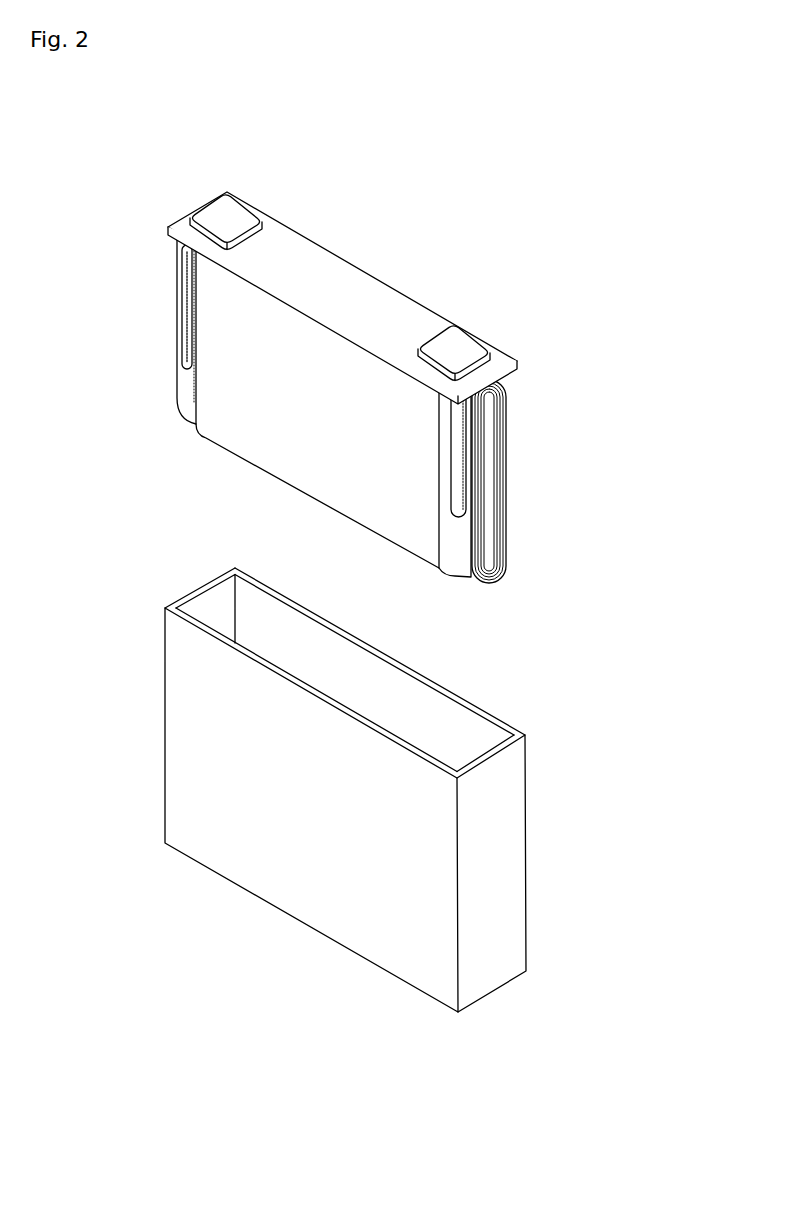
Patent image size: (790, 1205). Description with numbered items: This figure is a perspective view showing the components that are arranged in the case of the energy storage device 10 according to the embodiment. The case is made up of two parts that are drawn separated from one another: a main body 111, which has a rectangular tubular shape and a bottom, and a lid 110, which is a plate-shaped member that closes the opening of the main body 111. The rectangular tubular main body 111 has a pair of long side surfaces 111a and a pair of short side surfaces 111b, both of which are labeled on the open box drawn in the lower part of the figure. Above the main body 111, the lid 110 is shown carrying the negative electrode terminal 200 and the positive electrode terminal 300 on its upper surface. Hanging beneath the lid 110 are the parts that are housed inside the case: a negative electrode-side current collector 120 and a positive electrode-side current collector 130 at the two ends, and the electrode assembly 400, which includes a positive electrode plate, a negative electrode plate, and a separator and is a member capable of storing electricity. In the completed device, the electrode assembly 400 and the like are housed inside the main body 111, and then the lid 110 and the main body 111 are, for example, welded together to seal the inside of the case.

The energy storage device 10 is at (345, 341).
The lid 110 is at (355, 281).
The negative electrode-side current collector 120 is at (455, 459).
The positive electrode-side current collector 130 is at (185, 305).
The negative electrode terminal 200 is at (463, 347).
The positive electrode terminal 300 is at (232, 216).
The electrode assembly 400 is at (508, 488).
The main body 111 is at (376, 773).
The long side surfaces 111a is at (467, 703).
The short side surfaces 111b is at (193, 590).